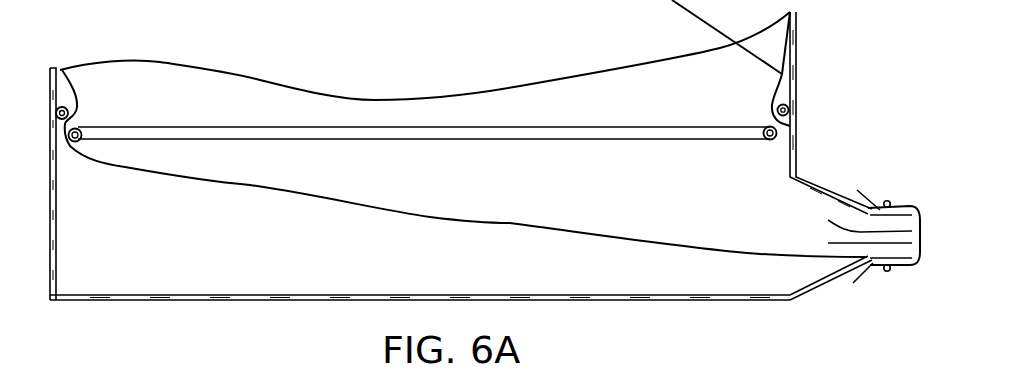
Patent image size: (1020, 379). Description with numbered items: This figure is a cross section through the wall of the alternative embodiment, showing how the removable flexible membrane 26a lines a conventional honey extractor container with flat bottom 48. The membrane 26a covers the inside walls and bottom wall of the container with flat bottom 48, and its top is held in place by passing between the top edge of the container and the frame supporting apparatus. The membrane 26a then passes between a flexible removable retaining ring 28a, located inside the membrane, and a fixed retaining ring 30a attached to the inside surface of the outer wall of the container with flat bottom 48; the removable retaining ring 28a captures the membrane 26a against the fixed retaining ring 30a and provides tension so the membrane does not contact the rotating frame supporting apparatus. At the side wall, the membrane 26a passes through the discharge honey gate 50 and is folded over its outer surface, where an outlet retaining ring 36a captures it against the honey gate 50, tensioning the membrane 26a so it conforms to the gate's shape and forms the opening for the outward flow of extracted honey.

The removable flexible membrane 26a is at (428, 218).
The flexible removable retaining ring 28a is at (796, 135).
The fixed retaining ring 30a is at (786, 104).
The outlet retaining ring 36a is at (891, 272).
The container with flat bottom 48 is at (228, 296).
The discharge honey gate 50 is at (822, 184).